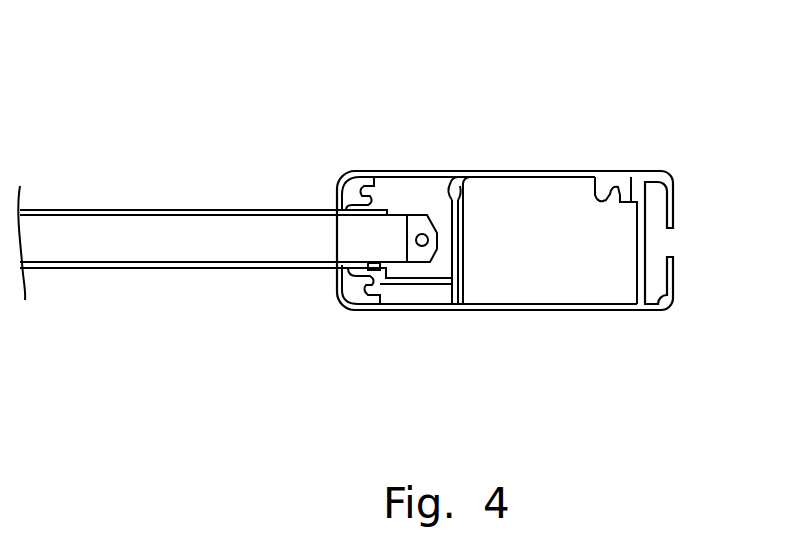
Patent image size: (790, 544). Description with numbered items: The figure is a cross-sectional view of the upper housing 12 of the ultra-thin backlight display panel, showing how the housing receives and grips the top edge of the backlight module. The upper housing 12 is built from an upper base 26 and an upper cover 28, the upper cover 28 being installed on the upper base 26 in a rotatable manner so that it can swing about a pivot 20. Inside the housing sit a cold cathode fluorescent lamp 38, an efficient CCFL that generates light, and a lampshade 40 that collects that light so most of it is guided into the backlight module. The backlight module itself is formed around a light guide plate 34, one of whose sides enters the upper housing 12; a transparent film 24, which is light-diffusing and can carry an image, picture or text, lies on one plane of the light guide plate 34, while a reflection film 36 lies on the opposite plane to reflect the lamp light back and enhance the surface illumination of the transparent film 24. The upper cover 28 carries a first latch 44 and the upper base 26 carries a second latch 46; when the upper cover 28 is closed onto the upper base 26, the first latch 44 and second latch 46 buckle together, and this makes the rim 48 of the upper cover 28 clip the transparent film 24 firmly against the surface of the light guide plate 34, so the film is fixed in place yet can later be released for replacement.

The upper housing 12 is at (673, 90).
The pivot 20 is at (613, 183).
The transparent film 24 is at (185, 213).
The upper base 26 is at (585, 312).
The upper cover 28 is at (548, 172).
The light guide plate 34 is at (118, 226).
The reflection film 36 is at (185, 267).
The cold cathode fluorescent lamp 38 is at (422, 247).
The lampshade 40 is at (424, 218).
The first latch 44 is at (478, 198).
The second latch 46 is at (449, 188).
The rim 48 is at (342, 181).